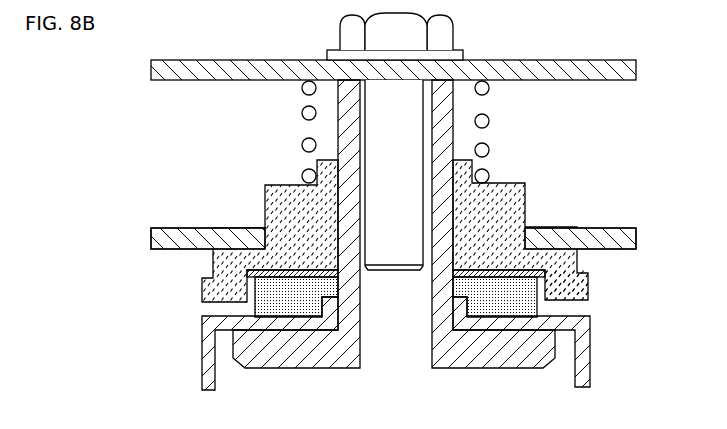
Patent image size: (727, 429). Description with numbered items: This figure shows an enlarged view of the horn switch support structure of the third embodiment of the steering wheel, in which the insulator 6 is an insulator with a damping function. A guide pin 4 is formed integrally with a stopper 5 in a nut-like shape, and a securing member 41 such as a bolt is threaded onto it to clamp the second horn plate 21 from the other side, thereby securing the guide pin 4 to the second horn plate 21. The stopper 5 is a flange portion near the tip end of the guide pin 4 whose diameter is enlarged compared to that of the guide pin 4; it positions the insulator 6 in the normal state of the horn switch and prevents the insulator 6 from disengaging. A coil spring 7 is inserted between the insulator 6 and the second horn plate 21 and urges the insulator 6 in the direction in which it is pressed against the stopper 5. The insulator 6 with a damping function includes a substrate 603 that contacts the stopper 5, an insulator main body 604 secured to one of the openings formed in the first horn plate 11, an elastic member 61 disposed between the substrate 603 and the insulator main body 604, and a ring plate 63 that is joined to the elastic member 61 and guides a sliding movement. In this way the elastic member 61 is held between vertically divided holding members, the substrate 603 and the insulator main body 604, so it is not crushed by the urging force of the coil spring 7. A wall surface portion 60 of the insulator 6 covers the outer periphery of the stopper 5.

The securing member 41 is at (342, 17).
The second horn plate 21 is at (191, 81).
The coil spring 7 is at (302, 145).
The first horn plate 11 is at (195, 228).
The ring plate 63 is at (508, 262).
The elastic member 61 is at (308, 307).
The guide pin 4 is at (399, 310).
The wall surface portion 60 is at (202, 360).
The stopper 5 is at (280, 370).
The insulator main body 604 is at (590, 288).
The substrate 603 is at (606, 334).
The insulator 6 is at (475, 328).